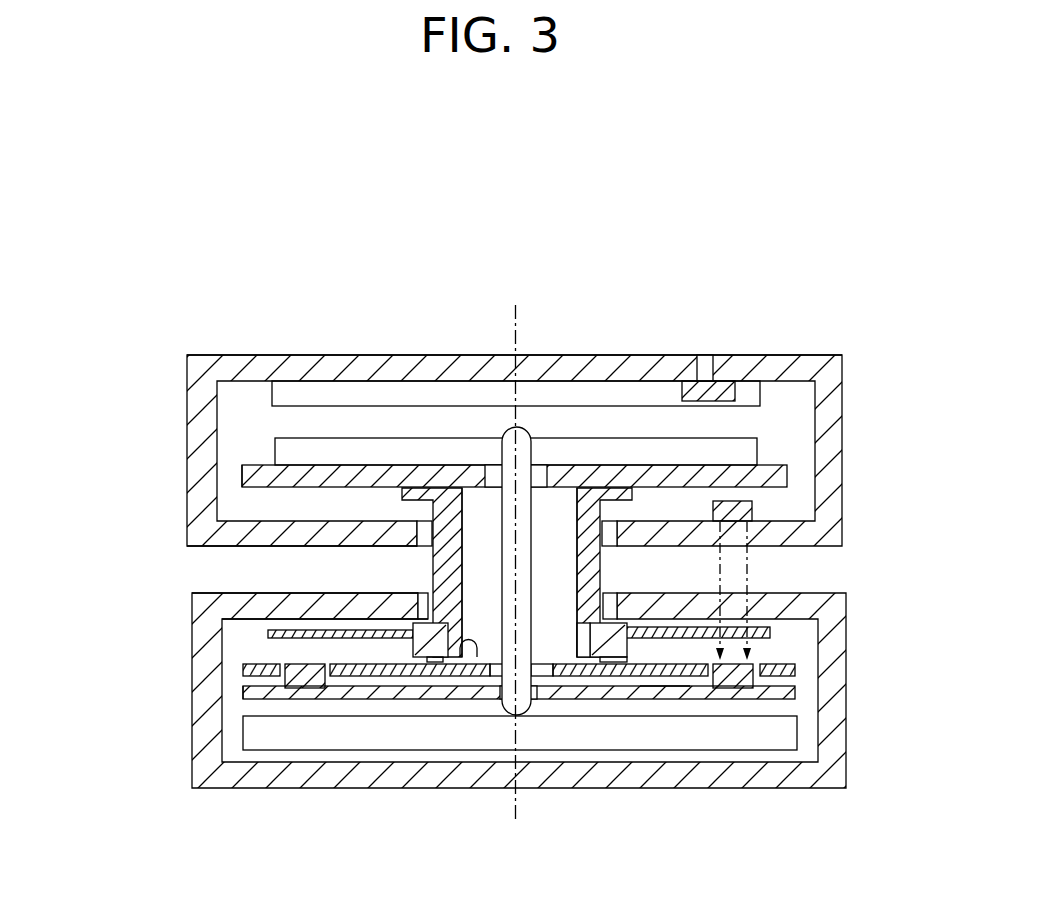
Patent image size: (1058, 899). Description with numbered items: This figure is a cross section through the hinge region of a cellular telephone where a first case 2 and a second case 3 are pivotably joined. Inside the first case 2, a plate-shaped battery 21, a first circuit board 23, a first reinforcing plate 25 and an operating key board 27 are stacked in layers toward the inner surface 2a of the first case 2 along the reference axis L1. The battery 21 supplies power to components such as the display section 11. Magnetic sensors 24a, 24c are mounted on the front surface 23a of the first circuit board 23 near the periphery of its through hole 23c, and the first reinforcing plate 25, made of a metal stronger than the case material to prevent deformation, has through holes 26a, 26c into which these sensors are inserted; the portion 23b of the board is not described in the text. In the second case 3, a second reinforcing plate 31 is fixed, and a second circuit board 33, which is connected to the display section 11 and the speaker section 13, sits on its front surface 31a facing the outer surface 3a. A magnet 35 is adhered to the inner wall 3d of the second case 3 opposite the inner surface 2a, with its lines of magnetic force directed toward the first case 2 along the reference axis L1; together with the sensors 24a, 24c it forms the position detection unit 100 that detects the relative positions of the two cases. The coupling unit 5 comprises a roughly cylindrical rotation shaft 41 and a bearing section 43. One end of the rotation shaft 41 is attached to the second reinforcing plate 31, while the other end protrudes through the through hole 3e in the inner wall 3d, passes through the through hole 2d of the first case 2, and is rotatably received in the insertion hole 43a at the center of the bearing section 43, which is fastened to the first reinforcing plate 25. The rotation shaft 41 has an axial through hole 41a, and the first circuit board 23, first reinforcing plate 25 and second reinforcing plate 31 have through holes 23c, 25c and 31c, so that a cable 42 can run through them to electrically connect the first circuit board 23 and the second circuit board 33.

The first case 2 is at (192, 770).
The inner surface of first case 2a is at (225, 594).
The through hole of first case 2d is at (610, 600).
The second case 3 is at (187, 406).
The outer surface of second case 3a is at (240, 355).
The inner wall of second case 3d is at (200, 547).
The through hole of second case 3e is at (425, 546).
The coupling unit 5 is at (500, 485).
The display section 11 is at (763, 390).
The speaker section 13 is at (740, 390).
The battery 21 is at (790, 733).
The first circuit board 23 is at (795, 692).
The front surface of first circuit board 23a is at (243, 690).
The right portion of lower plate 23b is at (660, 700).
The through hole of first circuit board 23c is at (528, 700).
The magnetic sensor 24a is at (305, 688).
The magnetic sensor 24c is at (735, 690).
The first reinforcing plate 25 is at (795, 670).
The through hole of first reinforcing plate 25c is at (495, 676).
The through hole of first reinforcing plate 26a is at (287, 676).
The through hole of first reinforcing plate 26c is at (775, 678).
The operating key board 27 is at (770, 632).
The second reinforcing plate 31 is at (790, 474).
The front surface of second reinforcing plate 31a is at (242, 476).
The through hole of second reinforcing plate 31c is at (545, 478).
The second circuit board 33 is at (750, 450).
The magnet 35 is at (753, 510).
The rotation shaft 41 is at (440, 513).
The through hole of rotation shaft 41a is at (478, 500).
The cable 42 is at (512, 716).
The bearing section 43 is at (610, 662).
The insertion hole 43a is at (580, 662).
The position detection unit 100 is at (272, 655).
The reference axis L1 is at (515, 312).